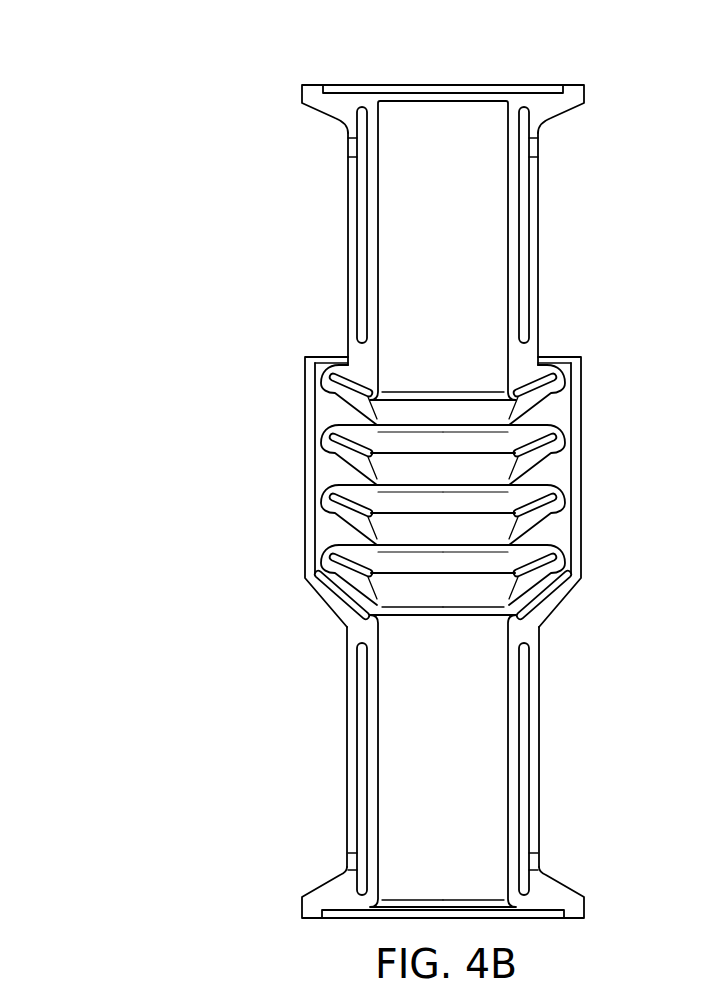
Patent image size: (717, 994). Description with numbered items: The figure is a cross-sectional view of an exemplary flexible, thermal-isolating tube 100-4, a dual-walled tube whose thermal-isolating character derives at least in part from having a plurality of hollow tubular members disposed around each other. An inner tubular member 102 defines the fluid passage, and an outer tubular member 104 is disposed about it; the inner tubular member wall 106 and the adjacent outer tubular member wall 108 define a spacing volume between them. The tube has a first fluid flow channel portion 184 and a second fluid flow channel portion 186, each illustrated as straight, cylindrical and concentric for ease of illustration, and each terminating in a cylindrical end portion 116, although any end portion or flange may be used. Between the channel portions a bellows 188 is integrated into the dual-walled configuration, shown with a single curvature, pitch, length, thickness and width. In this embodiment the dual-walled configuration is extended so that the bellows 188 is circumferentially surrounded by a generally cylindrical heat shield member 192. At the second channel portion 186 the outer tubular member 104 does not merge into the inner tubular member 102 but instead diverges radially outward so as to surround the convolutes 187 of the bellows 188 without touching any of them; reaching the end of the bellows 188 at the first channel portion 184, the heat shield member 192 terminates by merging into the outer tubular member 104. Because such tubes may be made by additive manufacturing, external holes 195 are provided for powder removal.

The flexible, thermal-isolating tube 100-4 is at (229, 180).
The cylindrical end portion 116 is at (587, 92).
The external hole 195 is at (348, 147).
The inner tubular member 102 is at (511, 216).
The outer tubular member 104 is at (535, 234).
The inner tubular member wall 106 is at (510, 283).
The outer tubular member wall 108 is at (533, 312).
The first fluid flow channel portion 184 is at (598, 117).
The heat shield member 192 is at (583, 359).
The bellows 188 is at (620, 360).
The convolute 187 is at (322, 499).
The second fluid flow channel portion 186 is at (560, 620).